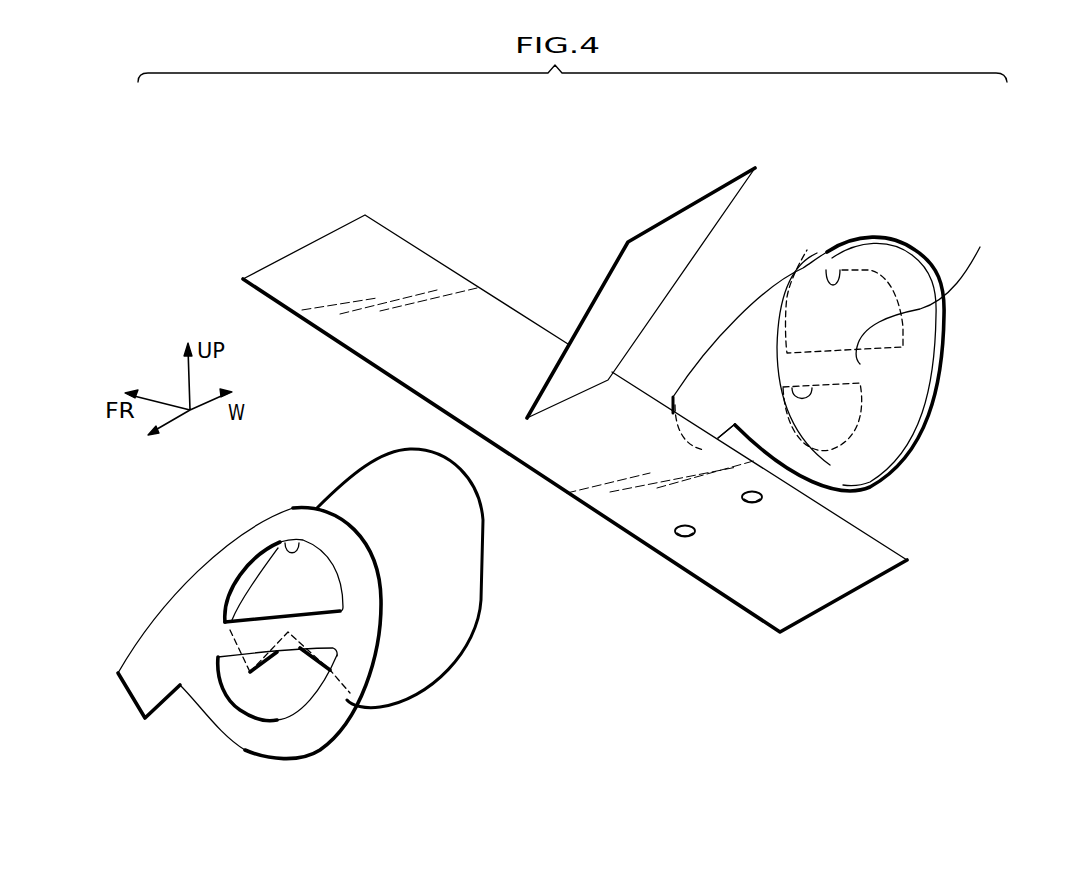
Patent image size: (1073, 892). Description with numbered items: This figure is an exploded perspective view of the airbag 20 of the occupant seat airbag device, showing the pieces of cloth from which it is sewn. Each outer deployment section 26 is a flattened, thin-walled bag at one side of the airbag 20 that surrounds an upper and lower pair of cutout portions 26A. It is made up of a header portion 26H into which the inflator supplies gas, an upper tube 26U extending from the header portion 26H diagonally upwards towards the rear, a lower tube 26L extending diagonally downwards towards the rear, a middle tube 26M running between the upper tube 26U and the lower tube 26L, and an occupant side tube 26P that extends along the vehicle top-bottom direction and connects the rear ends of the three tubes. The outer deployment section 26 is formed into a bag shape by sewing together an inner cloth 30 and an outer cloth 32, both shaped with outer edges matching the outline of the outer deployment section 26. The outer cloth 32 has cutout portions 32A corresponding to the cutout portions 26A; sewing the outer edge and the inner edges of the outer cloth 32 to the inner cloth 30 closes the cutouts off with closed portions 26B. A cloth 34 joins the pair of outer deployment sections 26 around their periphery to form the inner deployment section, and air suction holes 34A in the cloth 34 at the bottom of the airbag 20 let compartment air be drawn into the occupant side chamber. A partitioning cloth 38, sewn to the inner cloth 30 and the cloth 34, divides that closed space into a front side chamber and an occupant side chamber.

The airbag 20 is at (784, 154).
The partitioning cloth 38 is at (705, 227).
The outer deployment section 26 is at (927, 248).
The cutout portion 26A is at (811, 268).
The upper tube 26U is at (882, 257).
The middle tube 26M is at (929, 294).
The closed portion 26B is at (890, 332).
The occupant side tube 26P is at (907, 397).
The lower tube 26L is at (883, 457).
The header portion 26H is at (690, 387).
The inner cloth 30 is at (440, 657).
The outer cloth 32 is at (348, 712).
The cutout portion 32A is at (366, 451).
The cloth 34 is at (374, 346).
The air suction hole 34A is at (748, 506).